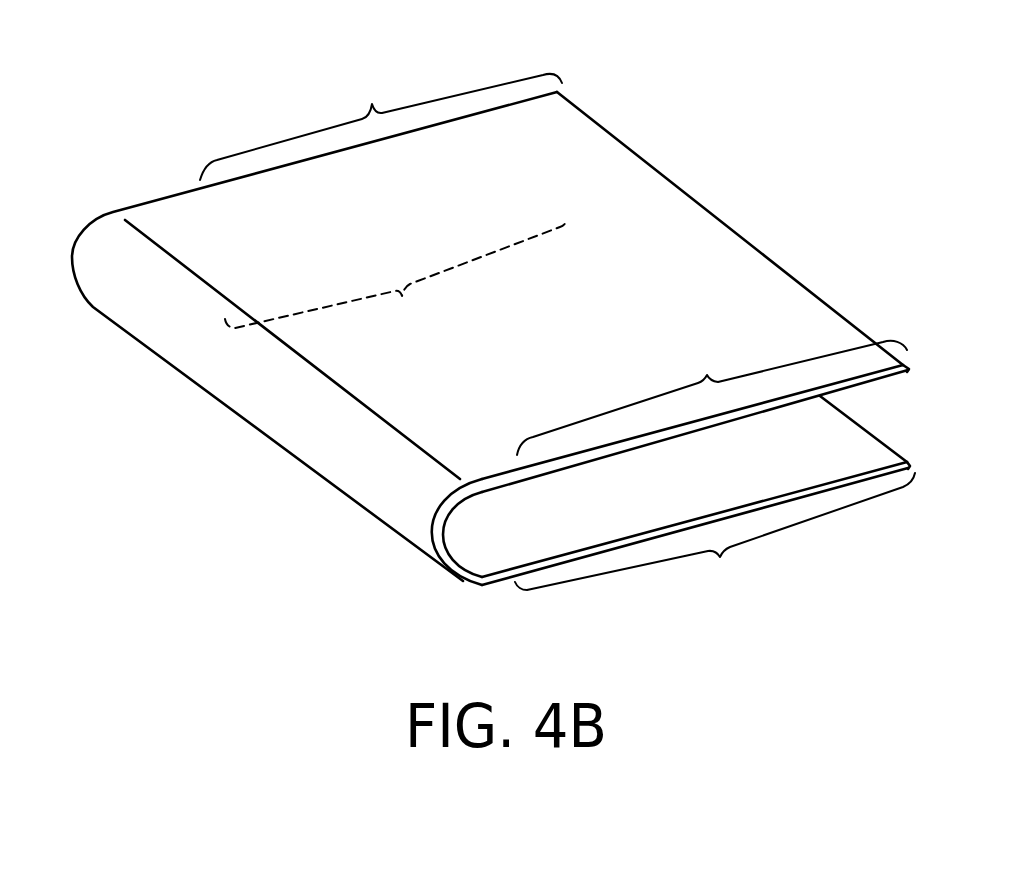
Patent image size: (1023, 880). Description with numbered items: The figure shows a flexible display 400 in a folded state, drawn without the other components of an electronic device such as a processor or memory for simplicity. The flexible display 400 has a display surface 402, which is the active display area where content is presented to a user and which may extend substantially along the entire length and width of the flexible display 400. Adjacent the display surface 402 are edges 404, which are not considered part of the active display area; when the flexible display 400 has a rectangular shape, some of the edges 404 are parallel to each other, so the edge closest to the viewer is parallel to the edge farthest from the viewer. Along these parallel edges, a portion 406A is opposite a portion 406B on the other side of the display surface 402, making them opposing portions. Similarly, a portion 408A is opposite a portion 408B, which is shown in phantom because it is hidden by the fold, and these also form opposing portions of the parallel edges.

The flexible display 400 is at (402, 622).
The display surface 402 is at (708, 235).
The edges 404 is at (907, 367).
The portion of the parallel edges 406A is at (722, 368).
The portion of the parallel edges 406B is at (387, 100).
The portion of the parallel edges 408A is at (748, 590).
The portion of the parallel edges 408B is at (432, 326).